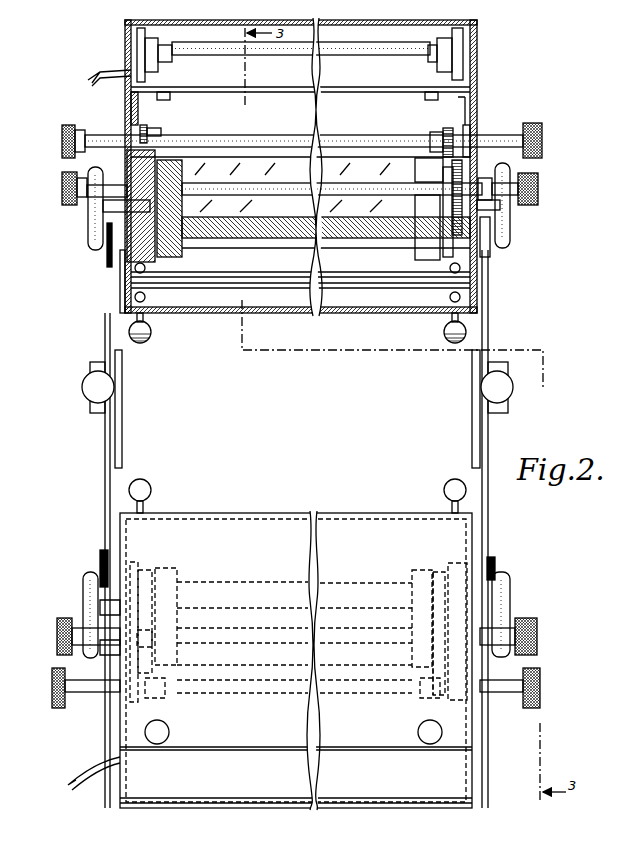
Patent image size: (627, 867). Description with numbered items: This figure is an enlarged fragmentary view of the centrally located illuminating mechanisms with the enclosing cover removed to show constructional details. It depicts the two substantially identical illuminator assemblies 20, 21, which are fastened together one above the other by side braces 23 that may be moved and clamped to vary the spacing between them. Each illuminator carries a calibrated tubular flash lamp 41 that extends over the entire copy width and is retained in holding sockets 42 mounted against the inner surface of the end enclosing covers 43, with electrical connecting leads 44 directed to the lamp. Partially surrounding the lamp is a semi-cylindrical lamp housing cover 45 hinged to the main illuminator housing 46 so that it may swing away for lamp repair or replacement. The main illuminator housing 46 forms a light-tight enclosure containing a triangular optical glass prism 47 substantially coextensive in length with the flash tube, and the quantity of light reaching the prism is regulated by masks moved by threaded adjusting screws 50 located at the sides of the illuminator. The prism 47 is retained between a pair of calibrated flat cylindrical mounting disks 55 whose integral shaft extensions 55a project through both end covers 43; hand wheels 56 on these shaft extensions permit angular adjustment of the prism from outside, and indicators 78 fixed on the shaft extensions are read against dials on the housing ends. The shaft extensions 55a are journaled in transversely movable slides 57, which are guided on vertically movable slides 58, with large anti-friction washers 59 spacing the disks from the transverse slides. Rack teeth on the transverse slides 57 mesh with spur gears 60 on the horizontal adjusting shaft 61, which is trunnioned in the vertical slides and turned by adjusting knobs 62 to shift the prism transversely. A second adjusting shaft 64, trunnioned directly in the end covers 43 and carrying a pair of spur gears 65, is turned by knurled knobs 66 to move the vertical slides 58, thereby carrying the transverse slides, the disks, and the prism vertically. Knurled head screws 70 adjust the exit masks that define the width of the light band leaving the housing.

The illuminator assembly 20 is at (88, 270).
The illuminator assembly 21 is at (72, 608).
The side brace 23 is at (105, 436).
The tubular flash lamp 41 is at (200, 55).
The holding socket 42 is at (137, 36).
The end enclosing cover 43 is at (125, 100).
The electrical connecting lead 44 is at (100, 72).
The semi-cylindrical lamp housing cover 45 is at (137, 785).
The main illuminator housing 46 is at (268, 518).
The triangular optical glass prism 47 is at (270, 218).
The threaded adjusting screw 50 is at (170, 732).
The flat cylindrical mounting disk 55 is at (182, 253).
The shaft extension 55a is at (128, 180).
The hand wheel 56 is at (88, 225).
The transversely movable slide 57 is at (150, 268).
The vertically movable slide 58 is at (118, 262).
The anti-friction washer 59 is at (184, 176).
The spur gear 60 is at (152, 134).
The adjusting shaft 61 is at (280, 135).
The adjusting knob 62 is at (62, 133).
The adjusting shaft 64 is at (268, 190).
The spur gear 65 is at (476, 168).
The knurled knob 66 is at (62, 183).
The knurled head screw 70 is at (152, 337).
The indicator 78 is at (105, 253).